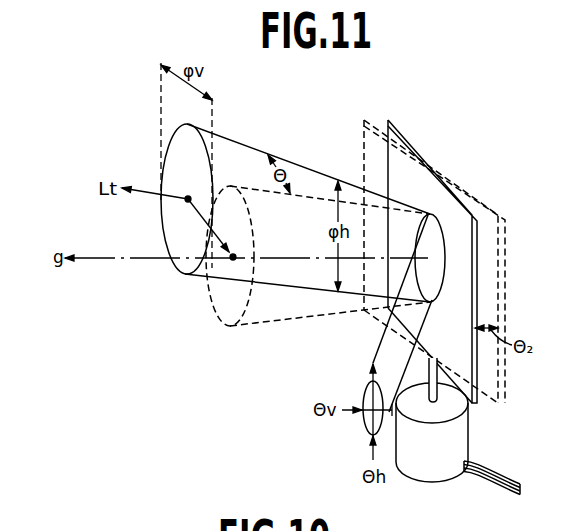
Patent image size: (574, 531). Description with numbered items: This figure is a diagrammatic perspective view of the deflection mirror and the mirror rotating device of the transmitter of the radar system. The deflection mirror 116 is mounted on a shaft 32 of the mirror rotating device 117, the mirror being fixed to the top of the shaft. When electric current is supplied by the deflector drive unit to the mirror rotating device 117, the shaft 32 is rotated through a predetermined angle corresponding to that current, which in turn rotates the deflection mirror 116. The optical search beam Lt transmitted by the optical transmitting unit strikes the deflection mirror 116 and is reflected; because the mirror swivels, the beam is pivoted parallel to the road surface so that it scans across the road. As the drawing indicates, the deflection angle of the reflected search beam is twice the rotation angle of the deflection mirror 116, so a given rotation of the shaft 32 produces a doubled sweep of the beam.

The deflection mirror 116 is at (403, 132).
The shaft 32 is at (463, 407).
The mirror rotating device 117 is at (442, 483).